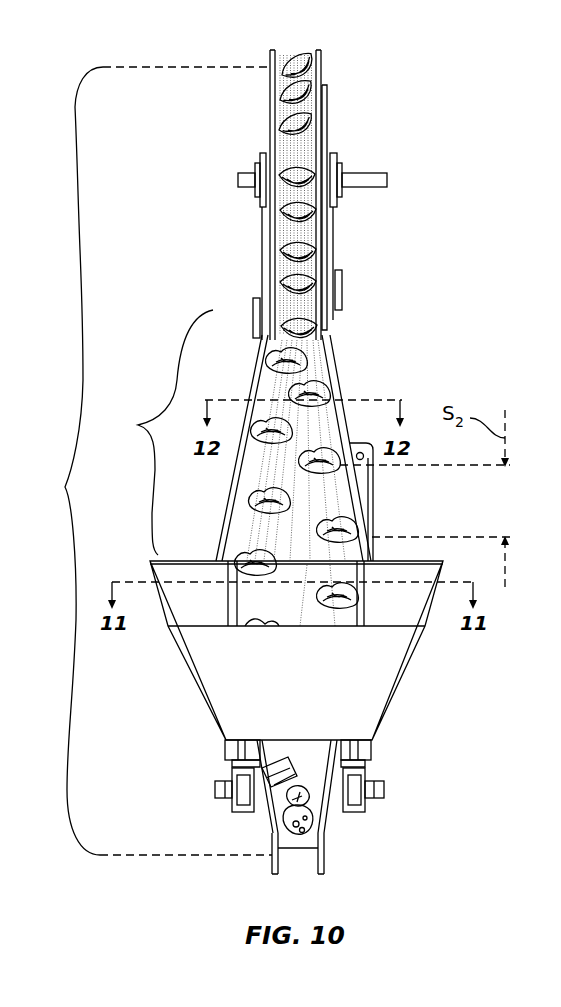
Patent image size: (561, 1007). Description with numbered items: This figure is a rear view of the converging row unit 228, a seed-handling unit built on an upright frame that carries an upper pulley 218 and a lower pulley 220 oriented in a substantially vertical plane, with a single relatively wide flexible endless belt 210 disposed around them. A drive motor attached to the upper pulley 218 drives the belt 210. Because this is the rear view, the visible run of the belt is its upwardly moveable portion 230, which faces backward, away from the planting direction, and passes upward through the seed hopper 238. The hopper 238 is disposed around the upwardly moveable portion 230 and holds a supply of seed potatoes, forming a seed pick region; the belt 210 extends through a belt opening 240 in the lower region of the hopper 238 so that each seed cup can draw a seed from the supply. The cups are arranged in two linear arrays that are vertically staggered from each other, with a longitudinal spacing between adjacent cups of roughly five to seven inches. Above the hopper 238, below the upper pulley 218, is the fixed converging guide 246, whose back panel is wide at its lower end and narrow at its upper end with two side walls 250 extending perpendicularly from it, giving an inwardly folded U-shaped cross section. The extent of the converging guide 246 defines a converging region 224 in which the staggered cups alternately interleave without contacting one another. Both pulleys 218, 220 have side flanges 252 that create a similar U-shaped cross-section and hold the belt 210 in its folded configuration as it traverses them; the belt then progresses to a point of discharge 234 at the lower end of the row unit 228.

The side flanges 252 is at (270, 57).
The upper pulley 218 is at (330, 100).
The converging row unit 228 is at (231, 146).
The flexible endless belt 210 is at (282, 383).
The converging guide 246 is at (389, 480).
The side walls 250 is at (332, 382).
The converging region 224 is at (152, 432).
The upwardly moveable portion 230 is at (145, 461).
The seed hopper 238 is at (418, 615).
The belt opening 240 is at (293, 743).
The lower pulley 220 is at (325, 842).
The point of discharge 234 is at (304, 878).